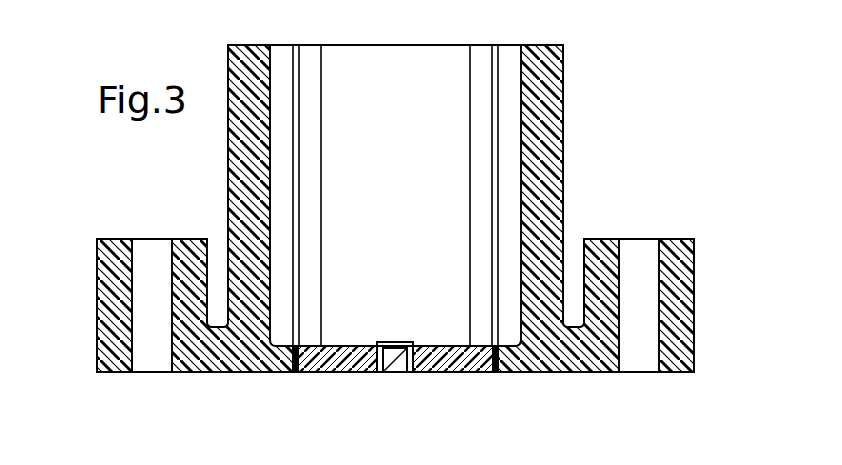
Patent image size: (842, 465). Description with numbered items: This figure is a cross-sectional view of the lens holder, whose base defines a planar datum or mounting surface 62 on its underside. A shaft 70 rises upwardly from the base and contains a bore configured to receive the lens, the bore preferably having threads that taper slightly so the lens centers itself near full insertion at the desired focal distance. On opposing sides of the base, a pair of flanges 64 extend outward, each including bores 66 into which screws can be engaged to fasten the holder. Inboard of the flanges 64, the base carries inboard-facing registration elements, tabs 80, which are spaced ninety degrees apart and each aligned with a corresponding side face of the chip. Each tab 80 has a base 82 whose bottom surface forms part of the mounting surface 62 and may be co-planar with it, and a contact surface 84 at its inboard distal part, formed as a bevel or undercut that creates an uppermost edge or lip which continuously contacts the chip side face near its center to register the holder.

The mounting surface 62 is at (236, 372).
The flanges 64 is at (97, 316).
The bores 66 is at (145, 235).
The shaft 70 is at (563, 117).
The tabs 80 is at (500, 372).
The base 82 is at (283, 368).
The contact surface 84 is at (470, 367).